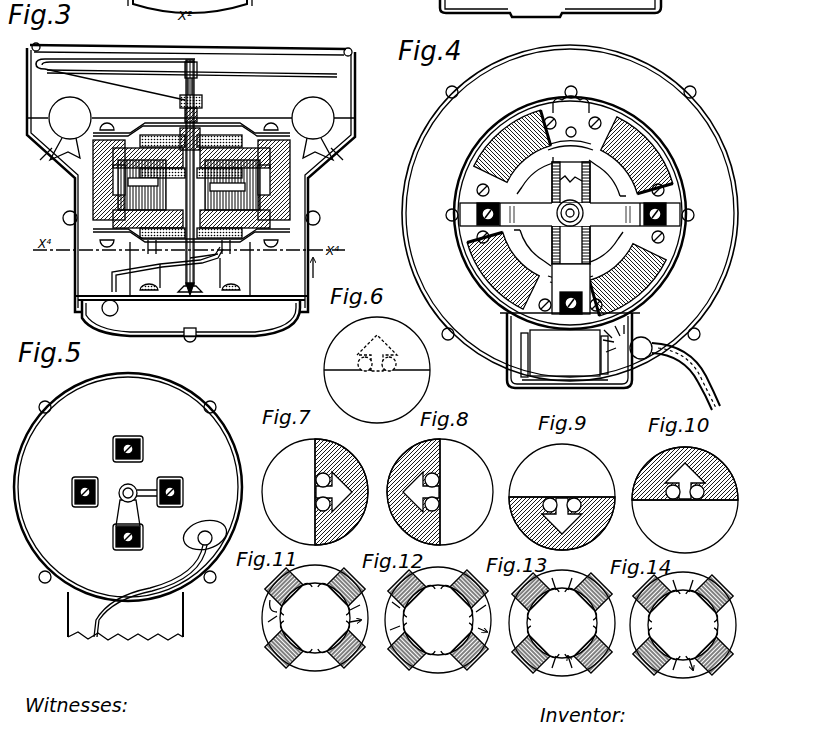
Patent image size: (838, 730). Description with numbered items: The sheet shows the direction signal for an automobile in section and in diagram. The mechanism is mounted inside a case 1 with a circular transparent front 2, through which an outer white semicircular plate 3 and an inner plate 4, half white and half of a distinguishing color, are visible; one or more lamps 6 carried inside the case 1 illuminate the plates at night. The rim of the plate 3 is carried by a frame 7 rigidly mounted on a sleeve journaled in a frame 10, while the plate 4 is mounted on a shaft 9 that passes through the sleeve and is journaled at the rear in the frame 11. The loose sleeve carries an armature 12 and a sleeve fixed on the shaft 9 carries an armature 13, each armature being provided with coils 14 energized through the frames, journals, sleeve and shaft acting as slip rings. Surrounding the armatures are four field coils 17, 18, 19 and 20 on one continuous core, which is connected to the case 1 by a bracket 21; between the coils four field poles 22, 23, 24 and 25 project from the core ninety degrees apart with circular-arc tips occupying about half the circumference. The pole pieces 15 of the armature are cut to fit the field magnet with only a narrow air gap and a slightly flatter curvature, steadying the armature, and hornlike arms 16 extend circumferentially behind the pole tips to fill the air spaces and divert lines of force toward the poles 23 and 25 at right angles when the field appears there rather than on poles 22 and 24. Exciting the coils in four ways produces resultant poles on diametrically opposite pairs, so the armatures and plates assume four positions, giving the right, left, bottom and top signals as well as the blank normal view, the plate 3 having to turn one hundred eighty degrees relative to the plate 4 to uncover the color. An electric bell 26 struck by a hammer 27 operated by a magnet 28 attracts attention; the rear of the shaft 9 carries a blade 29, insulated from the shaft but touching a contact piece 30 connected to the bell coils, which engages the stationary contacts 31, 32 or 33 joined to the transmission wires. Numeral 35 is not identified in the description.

In FIG. 3, the case 1 is at (322, 163).
In FIG. 4, the case 1 is at (722, 144).
In FIG. 3, the circular transparent front 2 is at (285, 53).
In FIG. 3, the outer semicircular plate 3 is at (197, 62).
In FIG. 7, the outer semicircular plate 3 is at (315, 492).
In FIG. 8, the outer semicircular plate 3 is at (440, 492).
In FIG. 9, the outer semicircular plate 3 is at (562, 497).
In FIG. 10, the outer semicircular plate 3 is at (685, 500).
In FIG. 3, the inner plate 4 is at (258, 75).
In FIG. 7, the inner plate 4 is at (330, 541).
In FIG. 8, the inner plate 4 is at (402, 525).
In FIG. 9, the inner plate 4 is at (600, 535).
In FIG. 10, the inner plate 4 is at (735, 498).
In FIG. 3, the lamp 6 is at (191, 128).
In FIG. 3, the frame 7 is at (132, 91).
In FIG. 3, the shaft 9 is at (197, 93).
In FIG. 3, the frame 10 is at (222, 128).
In FIG. 3, the frame 11 is at (225, 240).
In FIG. 4, the frame 11 is at (570, 257).
In FIG. 3, the armature 12 is at (250, 131).
In FIG. 3, the armature 13 is at (242, 232).
In FIG. 3, the coils 14 is at (172, 130).
In FIG. 4, the coils 14 is at (590, 189).
In FIG. 4, the pole pieces of the armature 15 is at (598, 276).
In FIG. 4, the hornlike arms 16 is at (570, 209).
In FIG. 4, the field coil 17 is at (640, 158).
In FIG. 4, the field coil 18 is at (633, 270).
In FIG. 4, the field coil 19 is at (508, 250).
In FIG. 4, the field coil 20 is at (513, 152).
In FIG. 3, the bracket 21 is at (95, 222).
In FIG. 4, the bracket 21 is at (586, 104).
In FIG. 4, the field pole 22 is at (590, 138).
In FIG. 4, the field pole 23 is at (640, 236).
In FIG. 4, the field pole 24 is at (548, 282).
In FIG. 4, the field pole 25 is at (495, 193).
In FIG. 3, the electric bell 26 is at (228, 333).
In FIG. 3, the hammer 27 is at (122, 274).
In FIG. 5, the hammer 27 is at (182, 562).
In FIG. 4, the magnet 28 is at (570, 350).
In FIG. 3, the blade 29 is at (189, 271).
In FIG. 5, the blade 29 is at (151, 489).
In FIG. 3, the contact piece 30 is at (196, 290).
In FIG. 5, the contact piece 30 is at (128, 525).
In FIG. 3, the stationary contact 31 is at (150, 280).
In FIG. 5, the stationary contact 31 is at (183, 492).
In FIG. 3, the stationary contact 32 is at (230, 274).
In FIG. 5, the stationary contact 32 is at (72, 492).
In FIG. 5, the stationary contact 33 is at (128, 441).
In FIG. 3, the armature core 35 is at (191, 194).